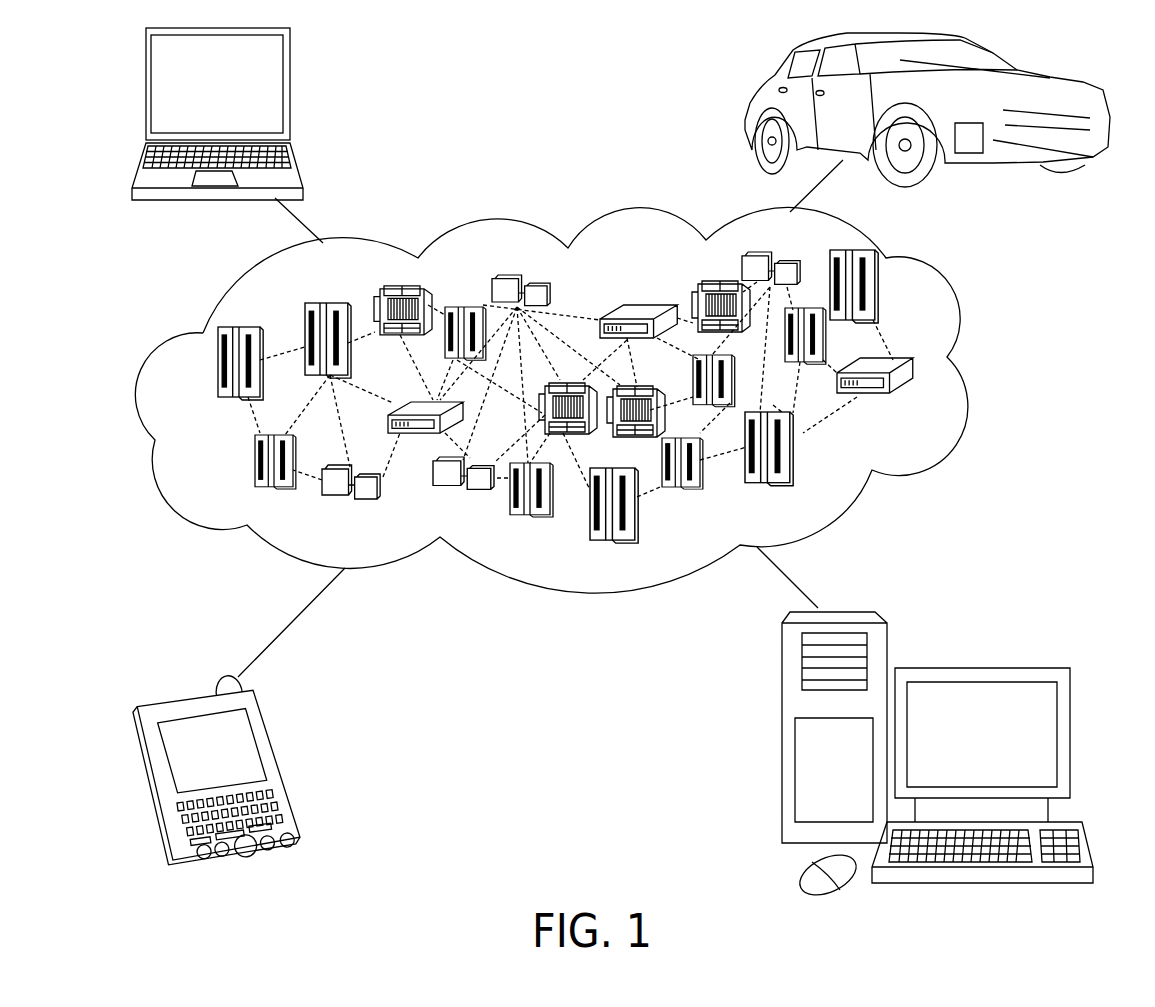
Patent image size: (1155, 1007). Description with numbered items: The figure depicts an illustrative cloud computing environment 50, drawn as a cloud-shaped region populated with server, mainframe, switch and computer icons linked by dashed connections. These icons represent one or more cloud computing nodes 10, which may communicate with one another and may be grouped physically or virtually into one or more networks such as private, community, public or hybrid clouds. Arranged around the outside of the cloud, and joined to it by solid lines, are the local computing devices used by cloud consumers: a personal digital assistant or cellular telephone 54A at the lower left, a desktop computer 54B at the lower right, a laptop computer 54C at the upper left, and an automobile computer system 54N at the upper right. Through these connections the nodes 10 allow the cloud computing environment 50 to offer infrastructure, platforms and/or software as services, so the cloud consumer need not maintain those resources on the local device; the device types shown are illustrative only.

The cloud computing node 10 is at (920, 401).
The cloud computing environment 50 is at (978, 372).
The personal digital assistant or cellular telephone 54A is at (278, 763).
The desktop computer 54B is at (978, 667).
The laptop computer 54C is at (291, 91).
The automobile computer system 54N is at (750, 108).